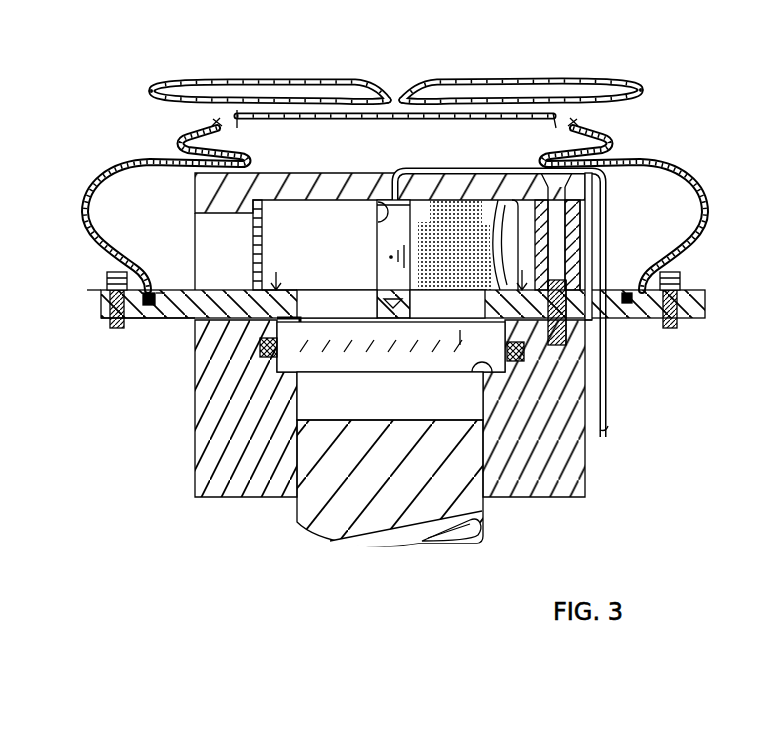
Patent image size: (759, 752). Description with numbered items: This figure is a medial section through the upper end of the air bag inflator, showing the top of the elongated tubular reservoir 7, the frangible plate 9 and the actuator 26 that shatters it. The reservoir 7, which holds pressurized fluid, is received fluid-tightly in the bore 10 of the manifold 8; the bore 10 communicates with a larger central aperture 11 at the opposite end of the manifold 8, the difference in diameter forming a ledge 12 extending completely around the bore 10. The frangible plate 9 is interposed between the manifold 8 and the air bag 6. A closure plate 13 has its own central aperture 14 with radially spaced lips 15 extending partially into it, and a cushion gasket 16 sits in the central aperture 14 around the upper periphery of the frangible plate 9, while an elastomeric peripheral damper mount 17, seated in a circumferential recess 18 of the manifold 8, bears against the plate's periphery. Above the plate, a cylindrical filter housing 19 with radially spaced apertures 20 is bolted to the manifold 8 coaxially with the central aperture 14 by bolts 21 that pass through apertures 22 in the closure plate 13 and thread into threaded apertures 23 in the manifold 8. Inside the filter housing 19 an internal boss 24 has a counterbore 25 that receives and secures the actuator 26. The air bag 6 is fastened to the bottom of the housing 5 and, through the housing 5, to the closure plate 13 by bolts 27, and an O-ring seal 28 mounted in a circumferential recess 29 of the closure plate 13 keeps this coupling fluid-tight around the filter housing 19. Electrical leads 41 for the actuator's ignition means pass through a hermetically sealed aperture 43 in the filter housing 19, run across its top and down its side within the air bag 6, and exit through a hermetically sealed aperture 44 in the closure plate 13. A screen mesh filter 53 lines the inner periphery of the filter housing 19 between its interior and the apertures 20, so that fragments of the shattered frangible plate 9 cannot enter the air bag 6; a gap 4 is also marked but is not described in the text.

The gap 4 is at (398, 268).
The housing 5 is at (700, 294).
The air bag 6 is at (601, 82).
The elongated tubular reservoir 7 is at (483, 505).
The manifold 8 is at (592, 468).
The frangible plate 9 is at (390, 375).
The bore 10 is at (298, 385).
The central aperture 11 is at (497, 335).
The ledge 12 is at (475, 374).
The closure plate 13 is at (192, 322).
The central aperture 14 is at (346, 291).
The lips 15 is at (305, 305).
The cushion gasket 16 is at (300, 331).
The elastomeric peripheral damper mount 17 is at (267, 350).
The circumferential recess 18 is at (267, 343).
The filter housing 19 is at (298, 173).
The apertures 20 is at (503, 288).
The bolts 21 is at (560, 217).
The apertures 22 is at (560, 346).
The threaded apertures 23 is at (572, 348).
The internal boss 24 is at (377, 211).
The counterbore 25 is at (377, 229).
The actuator 26 is at (389, 258).
The bolts 27 is at (118, 277).
The O-ring seal 28 is at (160, 303).
The circumferential recess 29 is at (148, 300).
The electrical leads 41 is at (612, 427).
The hermetically sealed aperture 43 is at (380, 200).
The hermetically sealed aperture 44 is at (617, 322).
The filter 53 is at (455, 203).